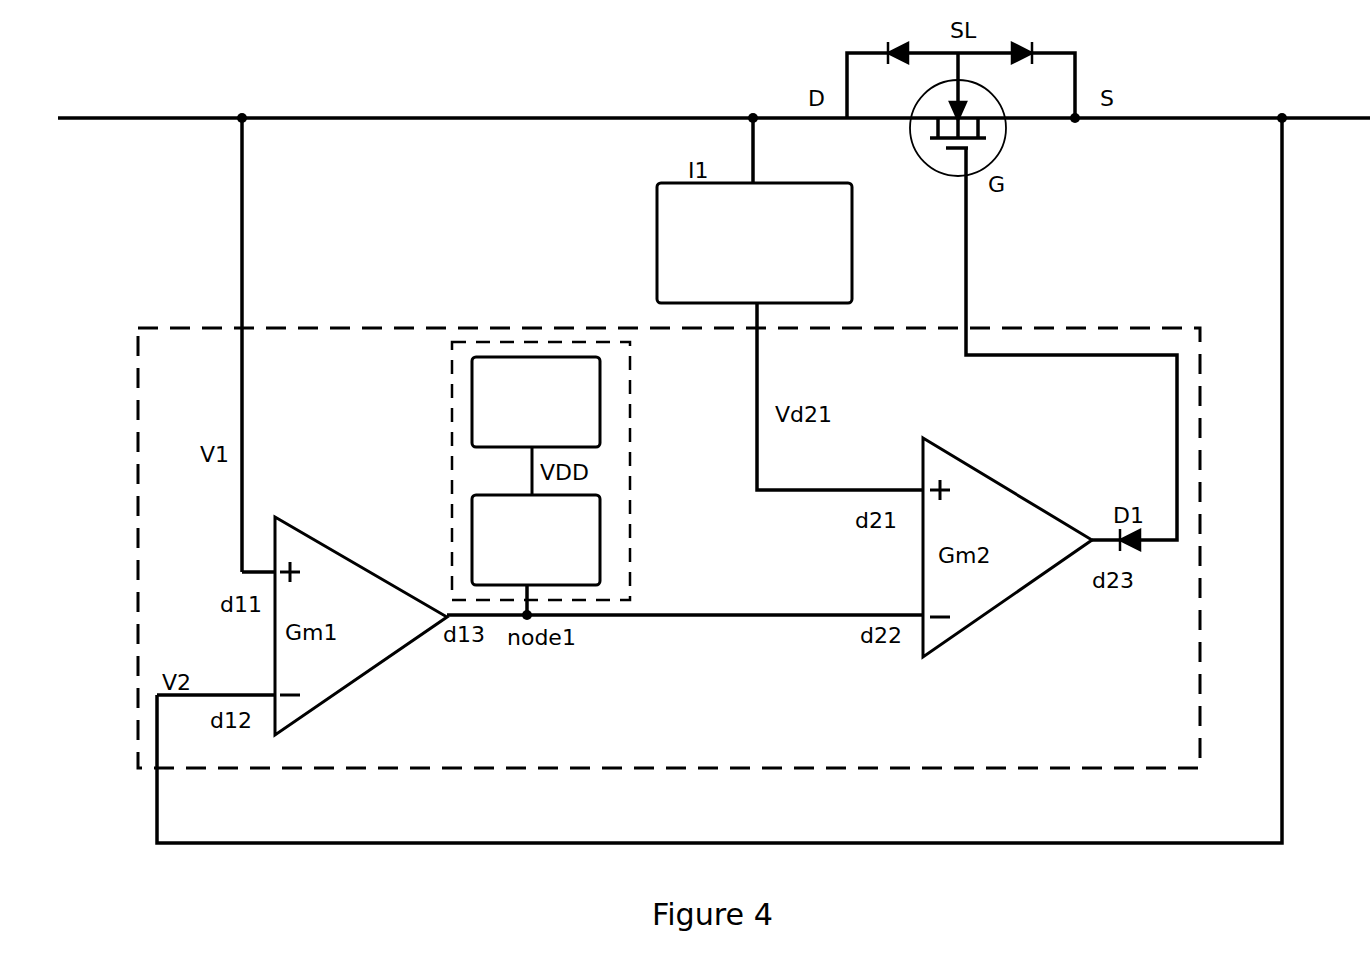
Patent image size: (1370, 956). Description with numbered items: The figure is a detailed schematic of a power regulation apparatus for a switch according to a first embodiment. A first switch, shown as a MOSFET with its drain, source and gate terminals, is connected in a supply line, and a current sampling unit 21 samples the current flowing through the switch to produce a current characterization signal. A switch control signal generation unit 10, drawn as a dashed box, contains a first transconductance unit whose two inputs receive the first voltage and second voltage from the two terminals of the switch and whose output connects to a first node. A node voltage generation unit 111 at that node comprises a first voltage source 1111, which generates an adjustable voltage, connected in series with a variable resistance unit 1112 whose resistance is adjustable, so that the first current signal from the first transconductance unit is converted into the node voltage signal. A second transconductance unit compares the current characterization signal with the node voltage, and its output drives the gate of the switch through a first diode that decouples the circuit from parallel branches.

The switch control signal generation unit 10 is at (1183, 326).
The current sampling unit 21 is at (795, 183).
The node voltage generation unit 111 is at (630, 405).
The first voltage source 1111 is at (472, 394).
The variable resistance unit 1112 is at (600, 500).